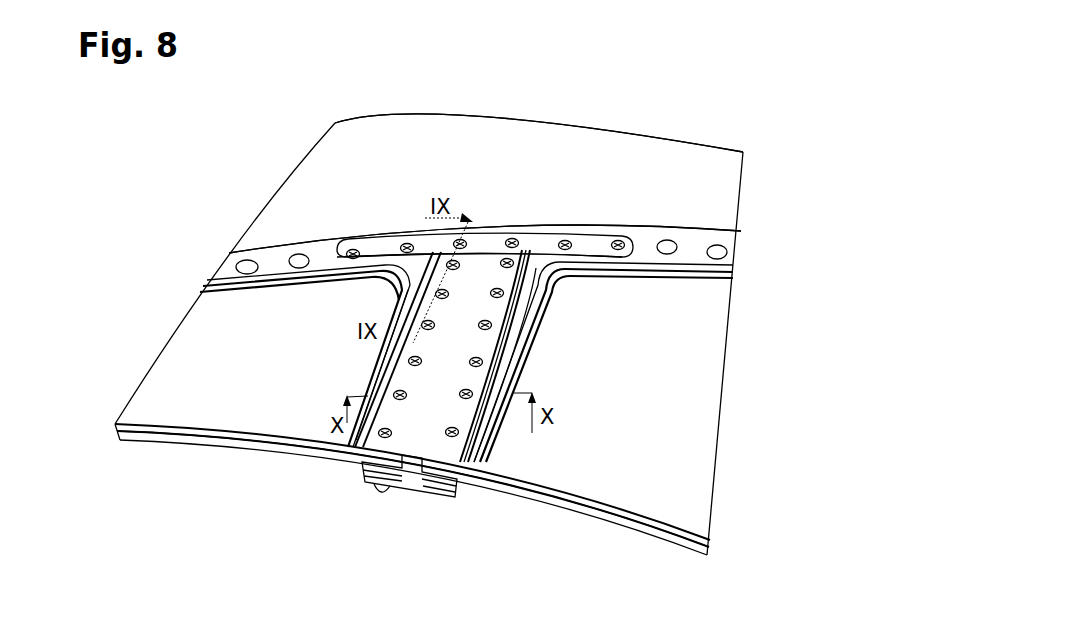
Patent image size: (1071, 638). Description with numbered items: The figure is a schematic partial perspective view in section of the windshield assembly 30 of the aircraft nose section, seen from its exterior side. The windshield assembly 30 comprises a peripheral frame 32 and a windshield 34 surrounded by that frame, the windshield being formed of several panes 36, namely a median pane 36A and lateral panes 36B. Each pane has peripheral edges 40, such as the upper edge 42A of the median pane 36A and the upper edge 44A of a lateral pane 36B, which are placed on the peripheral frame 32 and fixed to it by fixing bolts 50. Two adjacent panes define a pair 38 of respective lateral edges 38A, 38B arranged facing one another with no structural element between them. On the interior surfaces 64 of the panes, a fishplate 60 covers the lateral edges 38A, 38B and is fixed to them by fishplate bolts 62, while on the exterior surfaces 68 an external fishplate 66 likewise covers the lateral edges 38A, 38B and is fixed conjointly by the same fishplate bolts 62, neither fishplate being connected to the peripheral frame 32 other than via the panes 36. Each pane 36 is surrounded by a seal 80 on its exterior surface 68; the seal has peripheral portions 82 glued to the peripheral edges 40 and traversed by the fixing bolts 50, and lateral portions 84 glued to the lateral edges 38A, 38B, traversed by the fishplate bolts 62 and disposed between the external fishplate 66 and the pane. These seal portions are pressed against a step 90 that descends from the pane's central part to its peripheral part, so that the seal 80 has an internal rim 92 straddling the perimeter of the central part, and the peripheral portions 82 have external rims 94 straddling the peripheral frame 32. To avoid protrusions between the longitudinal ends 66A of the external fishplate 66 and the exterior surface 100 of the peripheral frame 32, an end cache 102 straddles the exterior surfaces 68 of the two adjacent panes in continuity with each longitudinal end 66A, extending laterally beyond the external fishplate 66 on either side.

The windshield assembly 30 is at (462, 334).
The windshield 34 is at (433, 334).
The peripheral frame 32 is at (694, 233).
The pane 36 is at (433, 334).
The median pane 36A is at (662, 424).
The lateral pane 36B is at (187, 370).
The peripheral edge 40 is at (452, 343).
The upper edge 42A is at (717, 283).
The upper edge 44A is at (230, 303).
The fixing bolt 50 is at (667, 240).
The fishplate 60 is at (363, 477).
The fishplate bolt 62 is at (377, 485).
The interior surface 64 is at (190, 447).
The external fishplate 66 is at (407, 417).
The longitudinal end 66A is at (488, 228).
The exterior surface 68 is at (173, 393).
The seal 80 is at (365, 353).
The peripheral portion 82 is at (517, 233).
The lateral portion 84 is at (398, 386).
The step 90 is at (592, 228).
The internal rim 92 is at (523, 306).
The external rim 94 is at (537, 249).
The exterior surface 100 is at (257, 240).
The end cache 102 is at (540, 240).
The pair of lateral edges 38 is at (376, 536).
The lateral edge 38A is at (383, 495).
The lateral edge 38B is at (433, 495).